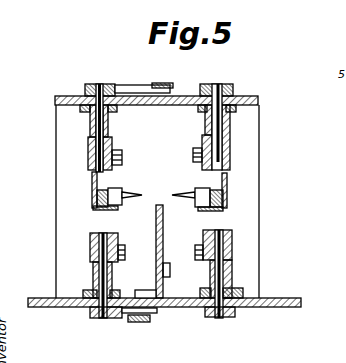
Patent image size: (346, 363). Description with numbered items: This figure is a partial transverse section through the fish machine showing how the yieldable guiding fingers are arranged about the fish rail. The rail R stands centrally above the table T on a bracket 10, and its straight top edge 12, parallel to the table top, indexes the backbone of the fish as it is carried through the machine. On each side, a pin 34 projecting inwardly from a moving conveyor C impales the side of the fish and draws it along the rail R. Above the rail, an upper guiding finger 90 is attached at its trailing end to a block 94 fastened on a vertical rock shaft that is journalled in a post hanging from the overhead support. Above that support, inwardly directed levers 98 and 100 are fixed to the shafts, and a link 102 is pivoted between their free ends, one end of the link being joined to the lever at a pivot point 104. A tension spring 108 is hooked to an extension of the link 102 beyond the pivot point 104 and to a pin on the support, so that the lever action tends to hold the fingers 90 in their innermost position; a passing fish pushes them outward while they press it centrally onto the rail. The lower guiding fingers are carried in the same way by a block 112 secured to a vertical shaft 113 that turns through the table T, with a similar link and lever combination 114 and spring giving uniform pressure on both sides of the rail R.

The tension spring 108 is at (108, 84).
The pivot point 104 is at (150, 85).
The link 102 is at (163, 83).
The lever 100 is at (228, 84).
The lever 98 is at (86, 92).
The block 94 is at (231, 152).
The upper guiding finger 90 is at (196, 150).
The pin 34 is at (136, 196).
The top edge 12 is at (164, 200).
The conveyor C is at (209, 182).
The rail R is at (185, 223).
The block 112 is at (90, 240).
The vertical shaft 113 is at (93, 270).
The bracket 10 is at (150, 290).
The link and lever combination 114 is at (120, 322).
The table T is at (289, 298).